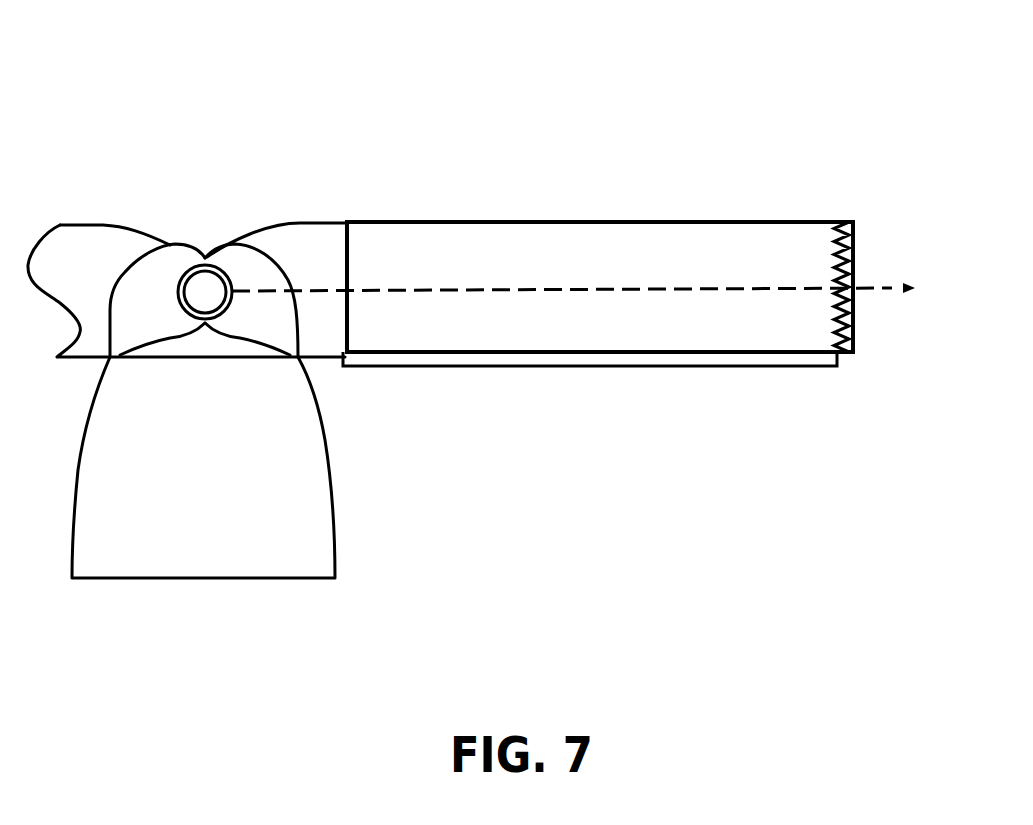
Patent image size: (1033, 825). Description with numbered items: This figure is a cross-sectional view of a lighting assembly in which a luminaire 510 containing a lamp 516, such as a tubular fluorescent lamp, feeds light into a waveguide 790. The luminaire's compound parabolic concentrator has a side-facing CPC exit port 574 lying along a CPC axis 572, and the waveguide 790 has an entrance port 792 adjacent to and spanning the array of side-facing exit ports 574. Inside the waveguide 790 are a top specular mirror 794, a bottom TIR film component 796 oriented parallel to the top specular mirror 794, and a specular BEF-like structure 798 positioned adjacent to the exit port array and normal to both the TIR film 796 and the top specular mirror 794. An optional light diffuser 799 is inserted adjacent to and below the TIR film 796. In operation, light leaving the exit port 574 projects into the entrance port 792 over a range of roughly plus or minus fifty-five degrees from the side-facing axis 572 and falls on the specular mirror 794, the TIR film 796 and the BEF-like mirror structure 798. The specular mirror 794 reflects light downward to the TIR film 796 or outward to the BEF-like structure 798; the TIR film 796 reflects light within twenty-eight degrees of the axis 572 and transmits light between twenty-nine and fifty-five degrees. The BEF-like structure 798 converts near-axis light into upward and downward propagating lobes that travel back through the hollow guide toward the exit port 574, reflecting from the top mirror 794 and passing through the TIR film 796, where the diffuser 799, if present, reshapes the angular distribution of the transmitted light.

The luminaire 510 is at (232, 190).
The lamp 516 is at (205, 290).
The CPC axis 572 is at (418, 290).
The CPC exit port 574 is at (342, 313).
The waveguide 790 is at (795, 185).
The entrance port 792 is at (340, 257).
The top specular mirror 794 is at (547, 223).
The bottom TIR film component 796 is at (628, 352).
The specular BEF-like structure 798 is at (857, 285).
The light diffuser 799 is at (500, 358).